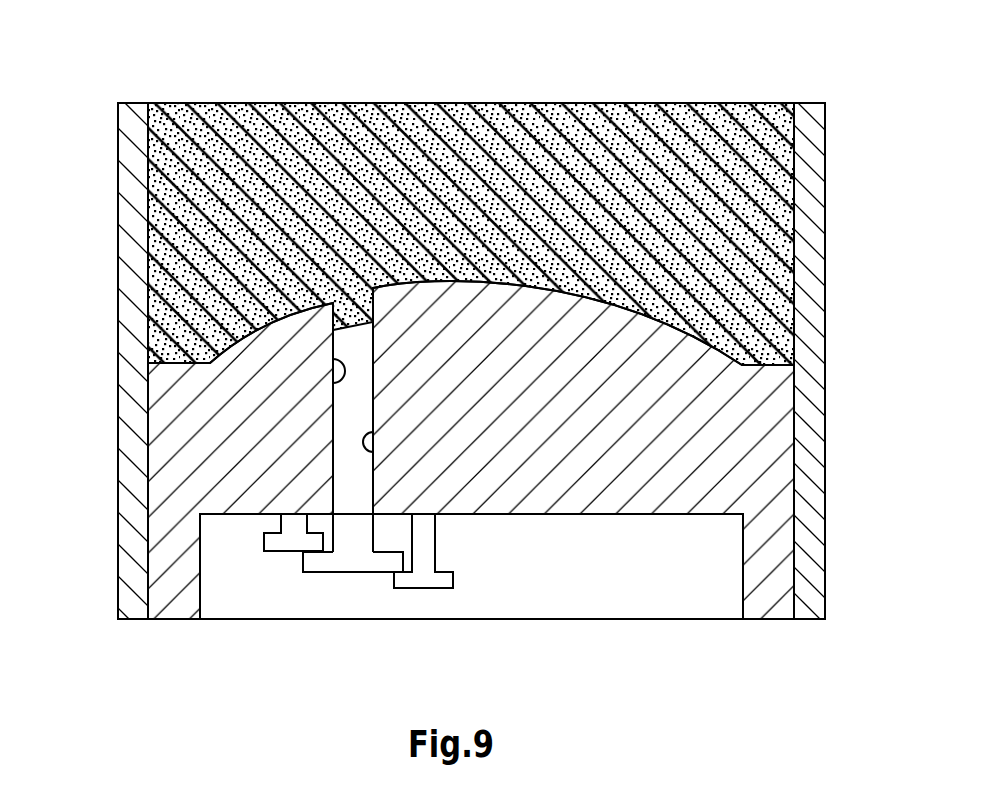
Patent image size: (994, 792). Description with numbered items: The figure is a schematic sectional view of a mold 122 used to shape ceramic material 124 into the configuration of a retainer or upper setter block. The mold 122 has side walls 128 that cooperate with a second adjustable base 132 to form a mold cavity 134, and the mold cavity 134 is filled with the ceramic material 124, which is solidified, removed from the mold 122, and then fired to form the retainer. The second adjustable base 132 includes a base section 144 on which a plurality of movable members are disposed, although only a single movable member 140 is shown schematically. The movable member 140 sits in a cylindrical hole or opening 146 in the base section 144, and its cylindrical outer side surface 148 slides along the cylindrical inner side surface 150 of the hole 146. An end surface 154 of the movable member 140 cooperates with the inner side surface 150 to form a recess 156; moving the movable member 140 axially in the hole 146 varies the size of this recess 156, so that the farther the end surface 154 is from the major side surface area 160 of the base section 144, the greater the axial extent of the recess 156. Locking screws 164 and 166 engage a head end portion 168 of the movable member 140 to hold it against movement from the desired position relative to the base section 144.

The mold 122 is at (845, 100).
The ceramic material 124 is at (495, 155).
The side walls 128 is at (128, 277).
The second adjustable base 132 is at (764, 457).
The mold cavity 134 is at (782, 165).
The movable member 140 is at (341, 407).
The base section 144 is at (190, 502).
The cylindrical hole or opening 146 is at (343, 376).
The cylindrical outer side surface 148 is at (362, 377).
The cylindrical inner side surface 150 is at (376, 452).
The end surface 154 is at (357, 327).
The recess 156 is at (347, 313).
The major side surface area 160 is at (580, 290).
The locking screw 164 is at (437, 582).
The locking screw 166 is at (283, 543).
The head end portion 168 is at (355, 565).